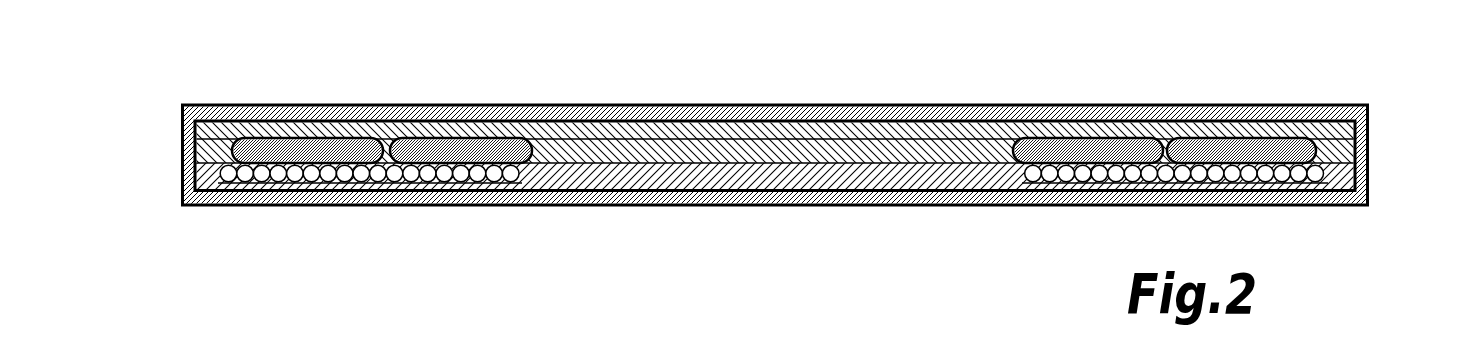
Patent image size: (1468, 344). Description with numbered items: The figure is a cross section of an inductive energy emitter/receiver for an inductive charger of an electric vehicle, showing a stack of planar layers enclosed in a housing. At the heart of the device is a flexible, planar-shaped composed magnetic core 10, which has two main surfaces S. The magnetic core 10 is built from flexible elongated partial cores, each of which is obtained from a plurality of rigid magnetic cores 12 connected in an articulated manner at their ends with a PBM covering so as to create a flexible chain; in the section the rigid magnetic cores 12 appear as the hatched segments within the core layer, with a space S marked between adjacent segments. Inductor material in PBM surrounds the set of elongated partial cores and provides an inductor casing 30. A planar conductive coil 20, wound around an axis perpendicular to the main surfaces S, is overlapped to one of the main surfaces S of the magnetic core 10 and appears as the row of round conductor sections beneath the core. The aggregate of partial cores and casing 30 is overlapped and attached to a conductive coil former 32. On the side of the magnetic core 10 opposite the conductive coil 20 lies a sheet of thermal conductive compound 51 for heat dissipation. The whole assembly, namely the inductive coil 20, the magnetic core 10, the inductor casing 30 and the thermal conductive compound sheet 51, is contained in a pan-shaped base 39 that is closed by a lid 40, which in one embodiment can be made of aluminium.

The magnetic core 10 is at (240, 148).
The rigid magnetic cores 12 is at (337, 150).
The main surfaces S is at (400, 142).
The planar conductive coil 20 is at (196, 176).
The inductor casing 30 is at (590, 150).
The conductive coil former 32 is at (212, 196).
The pan-shaped base 39 is at (663, 206).
The lid 40 is at (662, 106).
The sheet of thermal conductive compound 51 is at (182, 122).